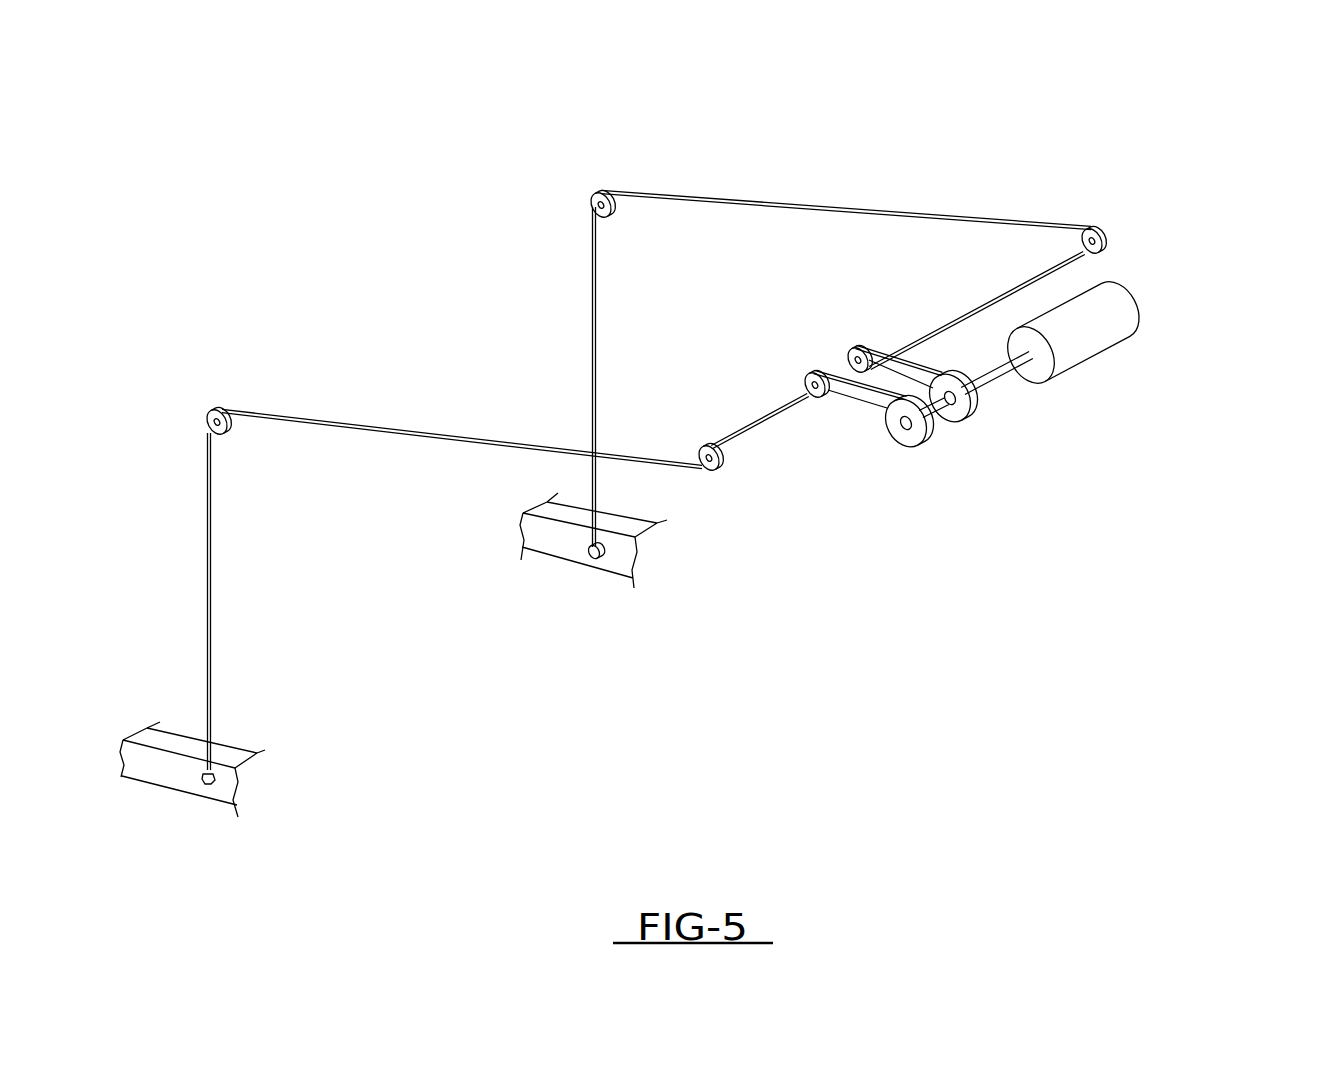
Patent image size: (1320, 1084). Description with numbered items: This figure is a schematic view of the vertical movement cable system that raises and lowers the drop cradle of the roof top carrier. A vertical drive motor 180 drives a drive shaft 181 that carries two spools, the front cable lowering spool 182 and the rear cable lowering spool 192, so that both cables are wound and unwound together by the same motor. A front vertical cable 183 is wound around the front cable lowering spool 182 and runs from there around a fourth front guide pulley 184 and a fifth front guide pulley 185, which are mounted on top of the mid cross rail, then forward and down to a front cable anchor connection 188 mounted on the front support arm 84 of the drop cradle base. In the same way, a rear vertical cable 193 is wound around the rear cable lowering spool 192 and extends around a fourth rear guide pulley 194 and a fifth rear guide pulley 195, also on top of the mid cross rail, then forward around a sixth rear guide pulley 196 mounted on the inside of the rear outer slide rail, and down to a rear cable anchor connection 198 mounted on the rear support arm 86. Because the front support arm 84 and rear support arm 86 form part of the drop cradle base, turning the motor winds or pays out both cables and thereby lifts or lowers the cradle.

The front support arm 84 is at (153, 738).
The rear support arm 86 is at (547, 545).
The vertical drive motor 180 is at (1113, 316).
The drive shaft 181 is at (1005, 372).
The front cable lowering spool 182 is at (912, 446).
The front vertical cable 183 is at (209, 527).
The fourth front guide pulley 184 is at (816, 400).
The fifth front guide pulley 185 is at (707, 445).
The front cable anchor connection 188 is at (206, 788).
The rear cable lowering spool 192 is at (962, 418).
The rear vertical cable 193 is at (590, 348).
The fourth rear guide pulley 194 is at (850, 352).
The fifth rear guide pulley 195 is at (1100, 232).
The sixth rear guide pulley 196 is at (603, 192).
The rear cable anchor connection 198 is at (597, 560).